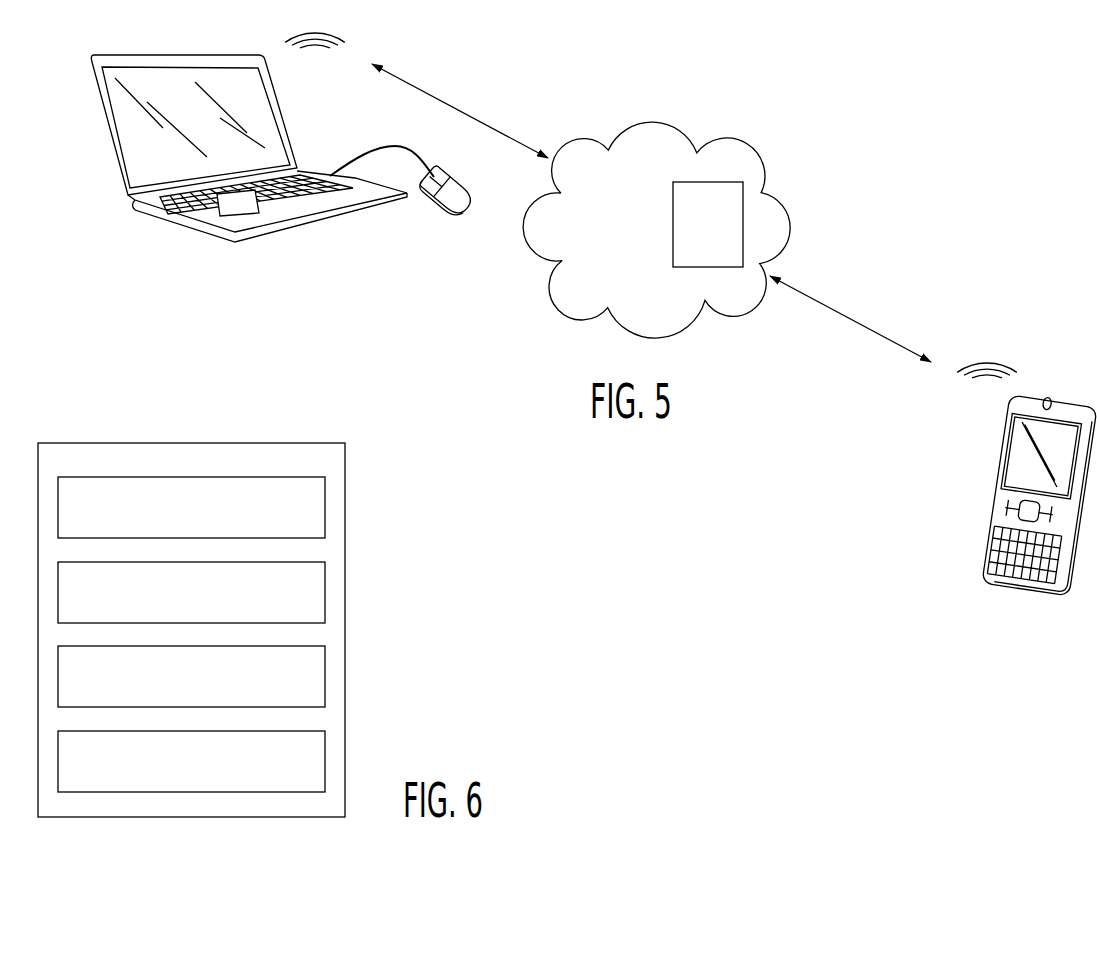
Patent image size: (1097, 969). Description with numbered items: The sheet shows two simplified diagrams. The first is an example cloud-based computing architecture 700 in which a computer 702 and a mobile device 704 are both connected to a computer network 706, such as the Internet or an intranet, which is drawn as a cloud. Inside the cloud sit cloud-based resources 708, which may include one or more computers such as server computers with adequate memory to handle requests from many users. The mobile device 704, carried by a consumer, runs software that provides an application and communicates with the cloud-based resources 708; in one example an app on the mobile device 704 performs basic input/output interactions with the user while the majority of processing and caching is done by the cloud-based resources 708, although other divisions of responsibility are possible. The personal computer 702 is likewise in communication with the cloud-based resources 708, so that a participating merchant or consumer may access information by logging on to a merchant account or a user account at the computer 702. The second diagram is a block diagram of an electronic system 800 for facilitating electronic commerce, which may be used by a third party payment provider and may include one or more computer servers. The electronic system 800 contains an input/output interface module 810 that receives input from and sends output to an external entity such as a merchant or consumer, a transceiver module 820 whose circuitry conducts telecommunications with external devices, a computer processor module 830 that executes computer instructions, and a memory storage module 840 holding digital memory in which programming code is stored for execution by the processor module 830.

In FIG. 5, the cloud-based computing architecture 700 is at (903, 79).
In FIG. 5, the computer 702 is at (188, 228).
In FIG. 5, the mobile device 704 is at (1013, 603).
In FIG. 5, the computer network 706 is at (748, 143).
In FIG. 5, the cloud-based resources 708 is at (723, 235).
In FIG. 6, the electronic system 800 is at (346, 545).
In FIG. 6, the input/output interface module 810 is at (275, 522).
In FIG. 6, the transceiver module 820 is at (268, 607).
In FIG. 6, the computer processor module 830 is at (263, 691).
In FIG. 6, the memory storage module 840 is at (288, 776).